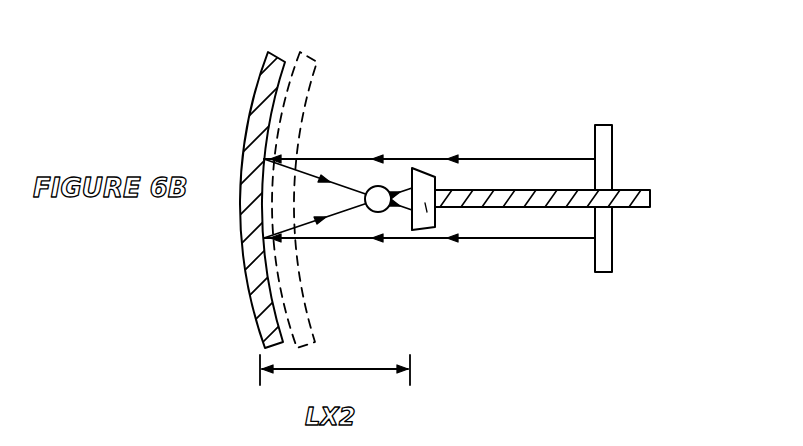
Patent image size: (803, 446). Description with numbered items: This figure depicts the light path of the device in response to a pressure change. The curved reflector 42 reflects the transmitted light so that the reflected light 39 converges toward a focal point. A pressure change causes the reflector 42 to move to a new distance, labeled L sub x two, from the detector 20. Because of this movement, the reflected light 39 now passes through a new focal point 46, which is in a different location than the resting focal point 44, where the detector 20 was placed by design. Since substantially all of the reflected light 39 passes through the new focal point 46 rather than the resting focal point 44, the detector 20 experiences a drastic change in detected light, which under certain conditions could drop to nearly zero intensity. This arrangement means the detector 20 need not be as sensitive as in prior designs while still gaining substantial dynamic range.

The reflected light 39 is at (320, 177).
The curved reflector 42 is at (270, 286).
The new focal point 46 is at (380, 185).
The resting focal point 44 is at (432, 173).
The detector 20 is at (427, 230).